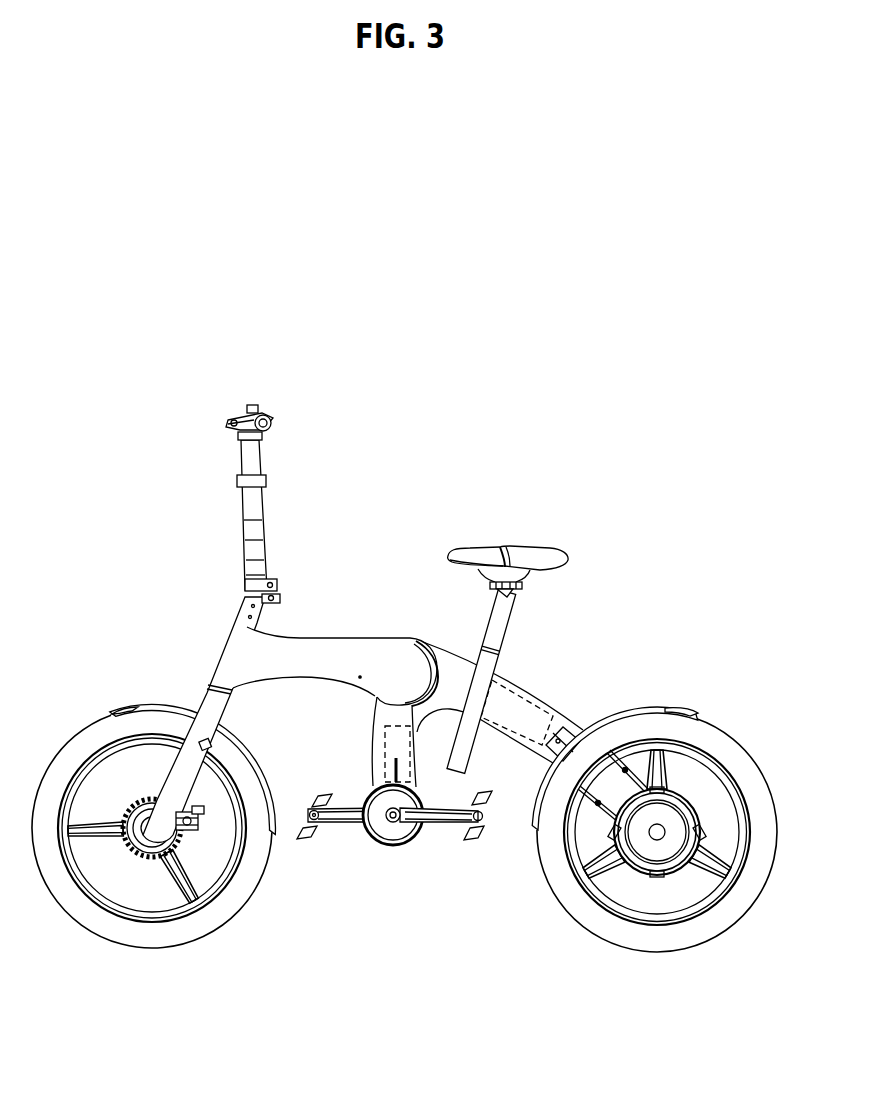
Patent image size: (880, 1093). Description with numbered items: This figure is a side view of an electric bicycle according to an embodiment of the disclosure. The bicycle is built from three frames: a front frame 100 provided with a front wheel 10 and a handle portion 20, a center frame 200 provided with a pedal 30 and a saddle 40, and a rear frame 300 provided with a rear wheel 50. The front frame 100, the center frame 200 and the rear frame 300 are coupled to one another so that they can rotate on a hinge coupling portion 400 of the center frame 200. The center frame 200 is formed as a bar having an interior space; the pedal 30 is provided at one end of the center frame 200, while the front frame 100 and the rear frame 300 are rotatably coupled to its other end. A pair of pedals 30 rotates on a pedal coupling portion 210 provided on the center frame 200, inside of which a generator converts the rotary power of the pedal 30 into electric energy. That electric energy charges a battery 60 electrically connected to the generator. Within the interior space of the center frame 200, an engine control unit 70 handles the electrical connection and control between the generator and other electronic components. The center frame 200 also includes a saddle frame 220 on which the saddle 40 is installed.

The front wheel 10 is at (118, 862).
The handle portion 20 is at (206, 416).
The pedal 30 is at (440, 824).
The saddle 40 is at (537, 553).
The rear wheel 50 is at (712, 802).
The battery 60 is at (508, 747).
The engine control unit (ECU) 70 is at (384, 746).
The front frame 100 is at (318, 628).
The center frame 200 is at (392, 846).
The pedal coupling portion 210 is at (395, 840).
The saddle frame 220 is at (457, 668).
The rear frame 300 is at (550, 680).
The hinge coupling portion 400 is at (390, 628).